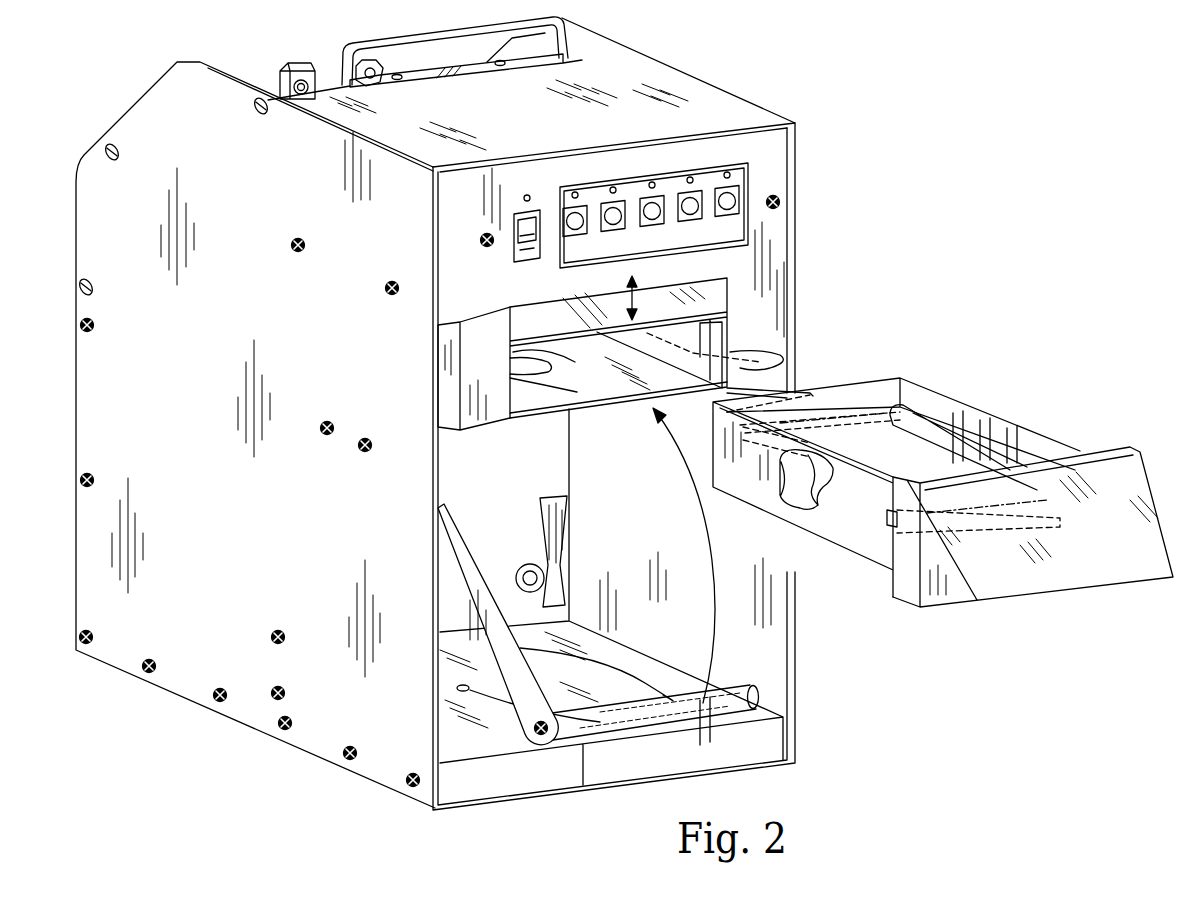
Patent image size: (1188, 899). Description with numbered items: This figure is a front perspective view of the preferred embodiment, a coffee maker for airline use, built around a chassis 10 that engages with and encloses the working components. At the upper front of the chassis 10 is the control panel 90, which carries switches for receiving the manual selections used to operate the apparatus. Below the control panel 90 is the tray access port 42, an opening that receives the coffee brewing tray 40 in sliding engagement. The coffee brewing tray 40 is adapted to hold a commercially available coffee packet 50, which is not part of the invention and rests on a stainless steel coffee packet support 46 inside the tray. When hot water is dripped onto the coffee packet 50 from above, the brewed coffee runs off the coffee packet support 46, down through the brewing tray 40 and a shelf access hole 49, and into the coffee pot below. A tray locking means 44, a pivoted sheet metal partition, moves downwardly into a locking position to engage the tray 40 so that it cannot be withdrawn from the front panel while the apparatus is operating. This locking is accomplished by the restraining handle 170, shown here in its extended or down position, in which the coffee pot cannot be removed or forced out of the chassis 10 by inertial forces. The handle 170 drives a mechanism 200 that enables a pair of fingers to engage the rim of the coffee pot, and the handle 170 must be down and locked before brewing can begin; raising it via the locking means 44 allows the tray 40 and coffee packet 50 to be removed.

The chassis 10 is at (382, 770).
The control panel 90 is at (780, 165).
The tray locking means 44 is at (713, 303).
The tray access port 42 is at (678, 381).
The shelf access hole 49 is at (646, 373).
The coffee brewing tray 40 is at (883, 547).
The coffee packet support 46 is at (820, 476).
The coffee packet 50 is at (933, 405).
The restraining handle 170 is at (660, 710).
The mechanism 200 is at (532, 736).